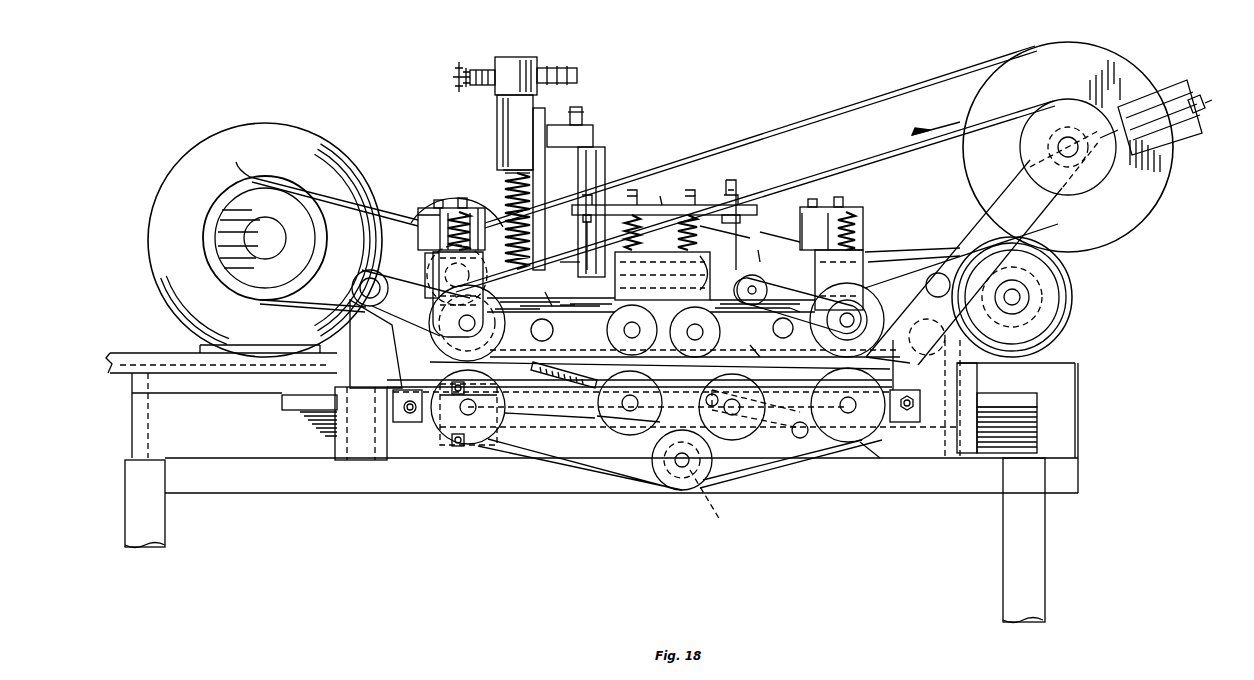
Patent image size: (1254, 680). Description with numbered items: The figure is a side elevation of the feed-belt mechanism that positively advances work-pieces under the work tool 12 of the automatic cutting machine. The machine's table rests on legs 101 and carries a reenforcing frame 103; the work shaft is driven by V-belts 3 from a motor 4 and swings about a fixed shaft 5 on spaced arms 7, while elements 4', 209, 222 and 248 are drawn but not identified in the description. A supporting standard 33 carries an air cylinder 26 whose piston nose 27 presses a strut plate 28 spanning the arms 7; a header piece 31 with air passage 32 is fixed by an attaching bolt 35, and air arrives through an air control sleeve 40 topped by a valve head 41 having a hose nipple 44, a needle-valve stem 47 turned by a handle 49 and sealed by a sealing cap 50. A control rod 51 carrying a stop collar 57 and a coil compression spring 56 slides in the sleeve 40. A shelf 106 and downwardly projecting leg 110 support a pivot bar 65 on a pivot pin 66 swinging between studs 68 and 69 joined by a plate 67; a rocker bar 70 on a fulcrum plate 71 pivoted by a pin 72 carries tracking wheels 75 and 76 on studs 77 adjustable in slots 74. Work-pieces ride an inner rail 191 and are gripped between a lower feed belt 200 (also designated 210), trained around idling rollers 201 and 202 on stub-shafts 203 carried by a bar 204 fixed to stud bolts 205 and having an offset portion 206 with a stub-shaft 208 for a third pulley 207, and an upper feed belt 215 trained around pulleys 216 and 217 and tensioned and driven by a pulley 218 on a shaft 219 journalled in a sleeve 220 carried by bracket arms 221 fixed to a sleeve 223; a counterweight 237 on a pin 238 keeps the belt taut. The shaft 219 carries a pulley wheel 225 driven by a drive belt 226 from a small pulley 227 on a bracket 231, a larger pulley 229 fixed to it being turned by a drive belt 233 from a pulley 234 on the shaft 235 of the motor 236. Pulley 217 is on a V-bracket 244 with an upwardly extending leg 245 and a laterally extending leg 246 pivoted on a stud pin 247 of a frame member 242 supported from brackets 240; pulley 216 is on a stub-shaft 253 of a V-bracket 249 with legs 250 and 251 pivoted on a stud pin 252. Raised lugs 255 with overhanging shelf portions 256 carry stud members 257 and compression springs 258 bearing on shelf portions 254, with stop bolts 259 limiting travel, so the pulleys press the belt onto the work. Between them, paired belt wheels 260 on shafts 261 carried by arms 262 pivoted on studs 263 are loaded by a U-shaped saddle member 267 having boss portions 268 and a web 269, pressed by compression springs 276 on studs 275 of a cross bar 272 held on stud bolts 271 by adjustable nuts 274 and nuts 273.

The V-belts 3 is at (340, 197).
The motor 4 is at (265, 240).
The wheel hub 4' is at (264, 224).
The fixed shaft 5 is at (322, 309).
The spaced arms 7 is at (567, 297).
The work tool 12 is at (662, 276).
The air cylinder 26 is at (605, 152).
The nose 27 is at (578, 255).
The strut plate 28 is at (543, 292).
The header piece 31 is at (595, 128).
The air passage 32 is at (664, 277).
The supporting standard 33 is at (530, 123).
The attaching bolt 35 is at (583, 108).
The air control sleeve 40 is at (497, 103).
The valve head 41 is at (516, 57).
The air hose attaching nipple 44 is at (562, 68).
The valve stem 47 is at (468, 68).
The handle 49 is at (456, 66).
The sealing cap 50 is at (484, 70).
The control rod 51 is at (505, 190).
The coil compression spring 56 is at (505, 178).
The stop collar 57 is at (503, 170).
The pivot bar 65 is at (795, 445).
The pivot pin 66 is at (830, 440).
The spaced plate 67 is at (450, 446).
The stud 68 is at (460, 448).
The stud 69 is at (440, 384).
The rocker bar 70 is at (555, 424).
The fulcrum plate 71 is at (630, 413).
The pivot pin 72 is at (708, 407).
The elongated slot 74 is at (552, 388).
The tracking wheel 75 is at (762, 350).
The tracking wheel 76 is at (590, 426).
The stud 77 is at (745, 392).
The legs 101 is at (152, 522).
The reenforcing frame 103 is at (263, 495).
The shelf 106 is at (282, 402).
The downwardly projecting leg 110 is at (330, 434).
The inner rail 191 is at (118, 385).
The lower feed belt 200 is at (630, 488).
The idling roller 201 is at (475, 445).
The idling roller 202 is at (862, 444).
The stub-shaft 203 is at (445, 430).
The horizontal extending bar 204 is at (912, 510).
The stud bolt 205 is at (405, 418).
The offset portion 206 is at (716, 508).
The third belt pulley 207 is at (690, 478).
The stub-shaft 208 is at (680, 470).
The belt 209 is at (612, 480).
The lower feed belt 210 is at (745, 506).
The upper feed belt 215 is at (868, 152).
The belt pulley 216 is at (551, 295).
The guide pulley 217 is at (926, 285).
The pulley 218 is at (1020, 155).
The shaft 219 is at (1085, 175).
The sleeve 220 is at (1125, 116).
The bracket arms 221 is at (985, 215).
The platform 222 is at (116, 350).
The sleeve 223 is at (926, 388).
The pulley wheel 225 is at (1102, 58).
The drive belt 226 is at (825, 106).
The small diameter pulley 227 is at (426, 262).
The larger pulley wheel 229 is at (404, 212).
The bracket 231 is at (388, 353).
The drive belt 233 is at (870, 250).
The smaller pulley wheel 234 is at (1060, 312).
The motor shaft 235 is at (1030, 297).
The driving motor 236 is at (1048, 280).
The counterweight 237 is at (1175, 80).
The supporting pin 238 is at (1212, 108).
The bracket 240 is at (350, 380).
The horizontal extending frame member 242 is at (786, 278).
The V-shaped bracket 244 is at (797, 306).
The upwardly extending leg 245 is at (839, 280).
The laterally extending leg 246 is at (798, 310).
The stud pin 247 is at (767, 290).
The hub 248 is at (839, 320).
The V-shaped bracket 249 is at (458, 294).
The upwardly projecting leg 250 is at (467, 275).
The laterally projecting leg 251 is at (406, 294).
The stud pin 252 is at (352, 288).
The stub-shaft 253 is at (467, 323).
The shelf portion 254 is at (422, 240).
The raised lugs 255 is at (418, 236).
The overhanging shelf portion 256 is at (438, 200).
The stud member 257 is at (462, 198).
The compression spring 258 is at (864, 214).
The threaded stop bolt 259 is at (418, 208).
The paired belt wheels 260 is at (612, 305).
The shaft 261 is at (695, 338).
The supporting arm 262 is at (667, 337).
The stud 263 is at (540, 320).
The U-shaped saddle member 267 is at (782, 234).
The boss portions 268 is at (695, 352).
The web 269 is at (739, 226).
The stud bolts 271 is at (588, 228).
The horizontal cross bar 272 is at (690, 192).
The nut 273 is at (736, 182).
The adjustable nut 274 is at (741, 216).
The fixed studs 275 is at (632, 190).
The compression spring 276 is at (661, 232).